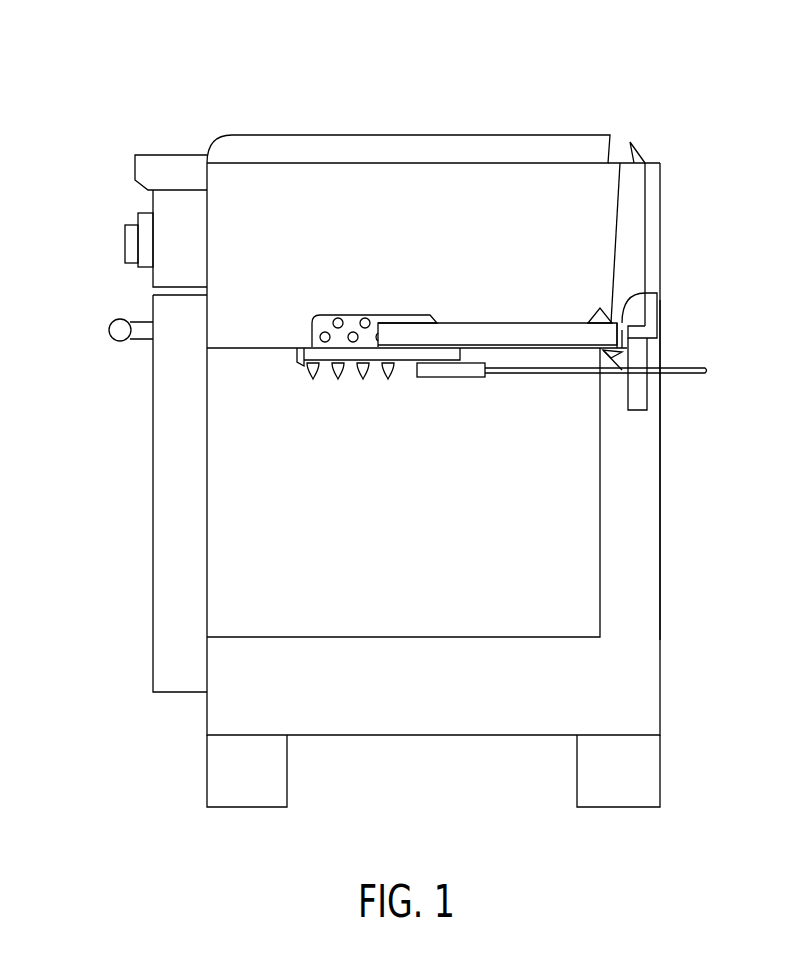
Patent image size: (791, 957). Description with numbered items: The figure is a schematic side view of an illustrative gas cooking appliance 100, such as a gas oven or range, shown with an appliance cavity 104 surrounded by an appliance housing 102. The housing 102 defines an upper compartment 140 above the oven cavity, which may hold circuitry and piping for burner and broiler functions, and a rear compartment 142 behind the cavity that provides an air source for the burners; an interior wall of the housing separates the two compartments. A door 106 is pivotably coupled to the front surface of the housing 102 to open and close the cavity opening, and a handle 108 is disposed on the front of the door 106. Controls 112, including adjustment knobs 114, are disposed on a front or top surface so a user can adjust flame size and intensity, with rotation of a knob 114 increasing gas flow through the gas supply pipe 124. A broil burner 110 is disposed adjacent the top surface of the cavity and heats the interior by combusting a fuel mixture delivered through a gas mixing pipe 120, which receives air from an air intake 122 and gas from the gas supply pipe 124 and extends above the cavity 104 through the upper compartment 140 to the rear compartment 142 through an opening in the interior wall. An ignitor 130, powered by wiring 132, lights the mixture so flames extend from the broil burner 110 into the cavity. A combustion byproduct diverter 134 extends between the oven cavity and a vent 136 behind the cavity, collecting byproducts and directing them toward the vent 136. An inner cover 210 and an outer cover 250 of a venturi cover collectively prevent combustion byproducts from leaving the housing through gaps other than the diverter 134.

The gas cooking appliance 100 is at (645, 85).
The appliance housing 102 is at (662, 705).
The appliance cavity 104 is at (585, 560).
The door 106 is at (175, 512).
The handle 108 is at (115, 330).
The broil burner 110 is at (305, 347).
The controls 112 is at (100, 212).
The adjustment knobs 114 is at (128, 245).
The gas mixing pipe 120 is at (625, 312).
The air intake 122 is at (627, 345).
The gas supply pipe 124 is at (650, 296).
The ignitor 130 is at (455, 372).
The wiring 132 is at (700, 376).
The combustion byproduct diverter 134 is at (588, 318).
The vent 136 is at (635, 200).
The upper compartment 140 is at (233, 177).
The rear compartment 142 is at (645, 622).
The inner cover 210 is at (580, 302).
The outer cover 250 is at (650, 378).